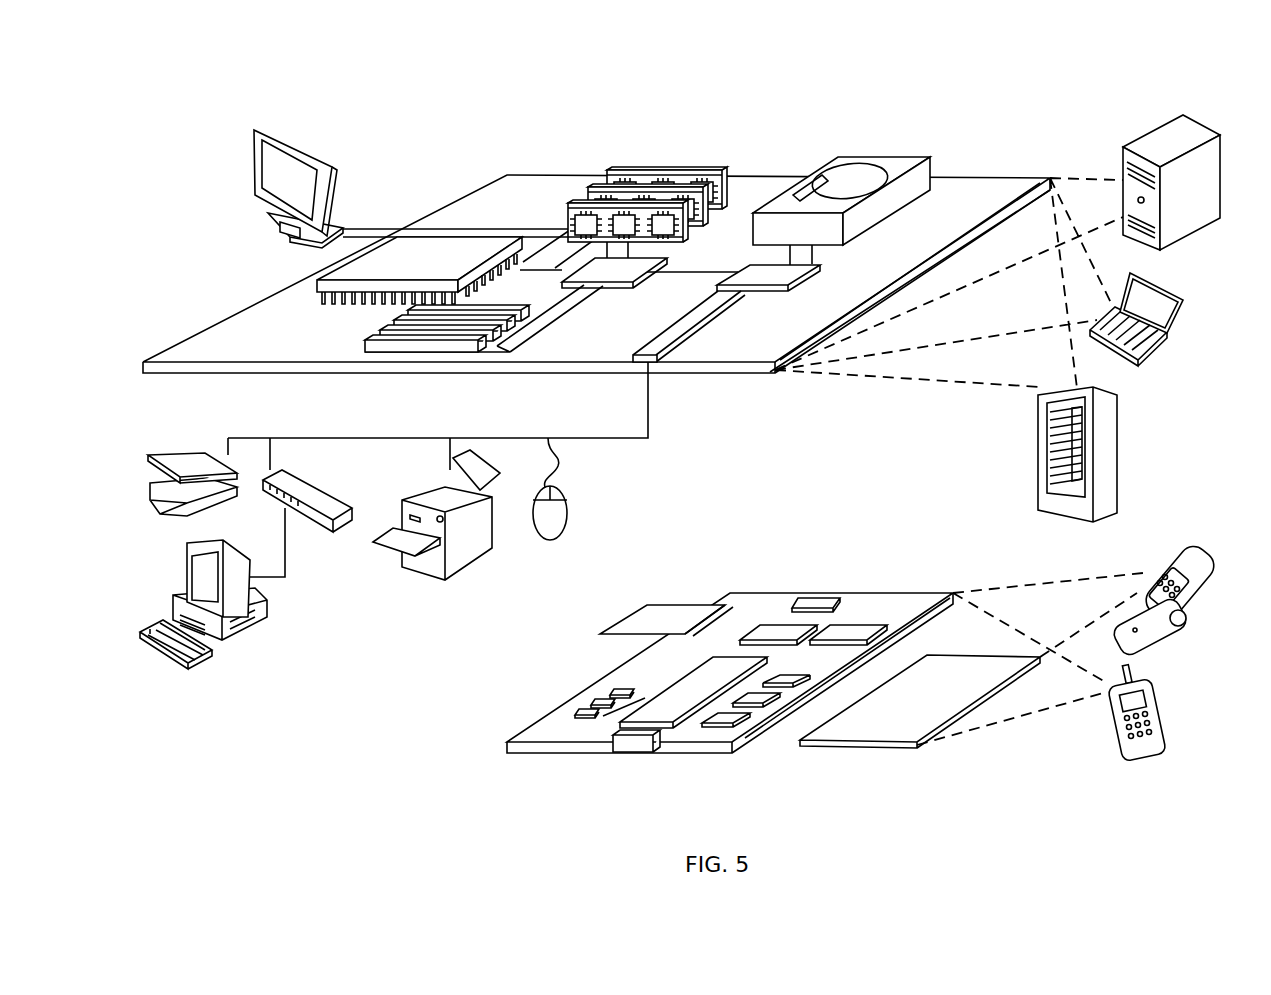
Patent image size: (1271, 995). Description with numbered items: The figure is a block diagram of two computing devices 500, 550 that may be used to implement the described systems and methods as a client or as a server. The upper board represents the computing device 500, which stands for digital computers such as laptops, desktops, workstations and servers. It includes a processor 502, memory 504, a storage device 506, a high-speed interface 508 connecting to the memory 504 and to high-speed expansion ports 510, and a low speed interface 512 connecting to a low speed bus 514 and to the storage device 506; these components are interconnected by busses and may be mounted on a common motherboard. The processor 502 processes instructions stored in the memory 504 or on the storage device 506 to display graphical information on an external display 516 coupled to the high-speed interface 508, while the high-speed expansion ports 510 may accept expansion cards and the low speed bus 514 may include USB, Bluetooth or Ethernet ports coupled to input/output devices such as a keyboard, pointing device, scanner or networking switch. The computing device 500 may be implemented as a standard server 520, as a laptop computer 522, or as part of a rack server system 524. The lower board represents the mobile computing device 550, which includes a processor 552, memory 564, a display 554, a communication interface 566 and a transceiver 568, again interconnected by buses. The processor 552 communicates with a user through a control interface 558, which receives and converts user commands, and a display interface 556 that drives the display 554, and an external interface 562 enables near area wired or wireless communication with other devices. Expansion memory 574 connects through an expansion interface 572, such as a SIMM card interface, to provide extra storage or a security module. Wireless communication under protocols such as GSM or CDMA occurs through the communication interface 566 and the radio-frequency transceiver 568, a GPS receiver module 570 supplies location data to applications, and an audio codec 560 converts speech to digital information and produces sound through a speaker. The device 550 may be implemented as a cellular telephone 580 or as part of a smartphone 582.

The computing device 500 is at (436, 154).
The processor 502 is at (317, 283).
The memory 504 is at (617, 170).
The storage device 506 is at (836, 155).
The high-speed interface 508 is at (593, 270).
The high-speed expansion ports 510 is at (388, 337).
The low speed interface 512 is at (752, 270).
The low speed bus 514 is at (657, 362).
The display 516 is at (262, 128).
The standard server 520 is at (1122, 158).
The laptop computer 522 is at (1183, 295).
The rack server system 524 is at (1040, 473).
The computing device 550 is at (487, 748).
The processor 552 is at (667, 715).
The display 554 is at (883, 728).
The display interface 556 is at (732, 718).
The control interface 558 is at (767, 698).
The audio codec 560 is at (783, 683).
The external interface 562 is at (635, 752).
The memory 564 is at (590, 705).
The communication interface 566 is at (777, 628).
The transceiver 568 is at (850, 628).
The GPS receiver module 570 is at (823, 600).
The expansion interface 572 is at (713, 607).
The expansion memory 574 is at (647, 607).
The cellular telephone 580 is at (1165, 555).
The smartphone 582 is at (1113, 720).